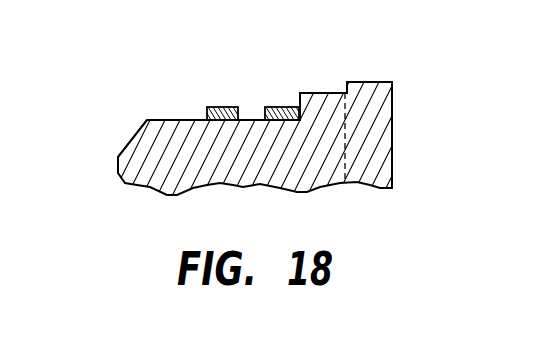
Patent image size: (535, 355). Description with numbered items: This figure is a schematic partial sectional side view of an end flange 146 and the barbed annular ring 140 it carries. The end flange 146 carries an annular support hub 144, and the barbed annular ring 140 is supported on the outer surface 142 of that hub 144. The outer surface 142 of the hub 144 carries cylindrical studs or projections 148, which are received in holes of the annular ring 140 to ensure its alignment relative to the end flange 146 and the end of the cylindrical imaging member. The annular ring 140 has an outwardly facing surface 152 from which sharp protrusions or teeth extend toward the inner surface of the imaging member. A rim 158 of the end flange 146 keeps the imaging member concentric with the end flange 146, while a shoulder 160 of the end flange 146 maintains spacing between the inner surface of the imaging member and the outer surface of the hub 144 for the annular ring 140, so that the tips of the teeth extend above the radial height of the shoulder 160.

The barbed annular ring 140 is at (190, 87).
The outer surface 142 is at (176, 120).
The annular support hub 144 is at (118, 160).
The end flange 146 is at (435, 118).
The projections 148 is at (257, 106).
The outwardly facing surface 152 is at (222, 107).
The rim 158 is at (331, 91).
The shoulder 160 is at (301, 94).